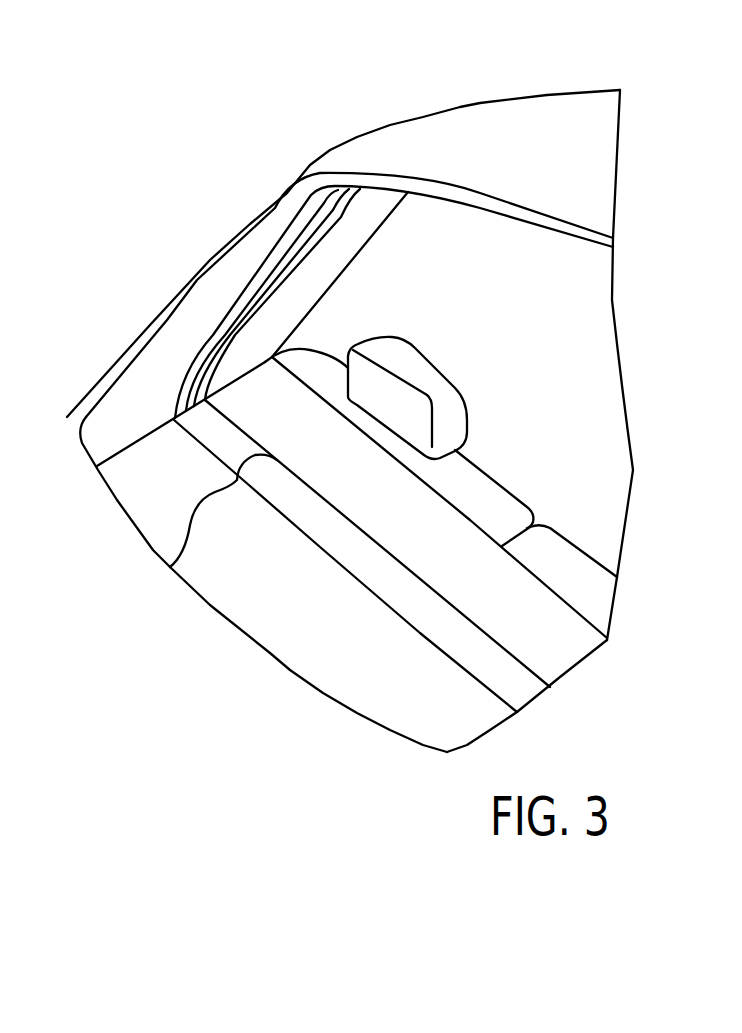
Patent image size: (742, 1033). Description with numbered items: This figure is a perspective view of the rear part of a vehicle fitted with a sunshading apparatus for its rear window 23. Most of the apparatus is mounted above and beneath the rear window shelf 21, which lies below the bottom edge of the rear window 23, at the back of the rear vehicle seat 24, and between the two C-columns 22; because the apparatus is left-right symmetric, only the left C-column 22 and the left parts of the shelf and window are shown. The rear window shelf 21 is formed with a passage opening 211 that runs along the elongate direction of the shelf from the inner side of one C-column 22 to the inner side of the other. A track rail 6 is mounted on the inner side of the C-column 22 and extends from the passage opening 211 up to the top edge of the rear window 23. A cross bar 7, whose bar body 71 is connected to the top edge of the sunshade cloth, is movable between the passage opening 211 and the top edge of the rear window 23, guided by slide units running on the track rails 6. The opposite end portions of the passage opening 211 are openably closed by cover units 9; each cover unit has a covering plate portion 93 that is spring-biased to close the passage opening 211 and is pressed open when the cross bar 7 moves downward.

The track rail 6 is at (269, 272).
The cross bar 7 is at (462, 668).
The cover unit 9 is at (198, 455).
The rear window shelf 21 is at (118, 450).
The C-column 22 is at (207, 302).
The rear window 23 is at (482, 228).
The rear vehicle seat 24 is at (425, 378).
The bar body 71 is at (358, 558).
The covering plate portion 93 is at (217, 427).
The passage opening 211 is at (170, 567).